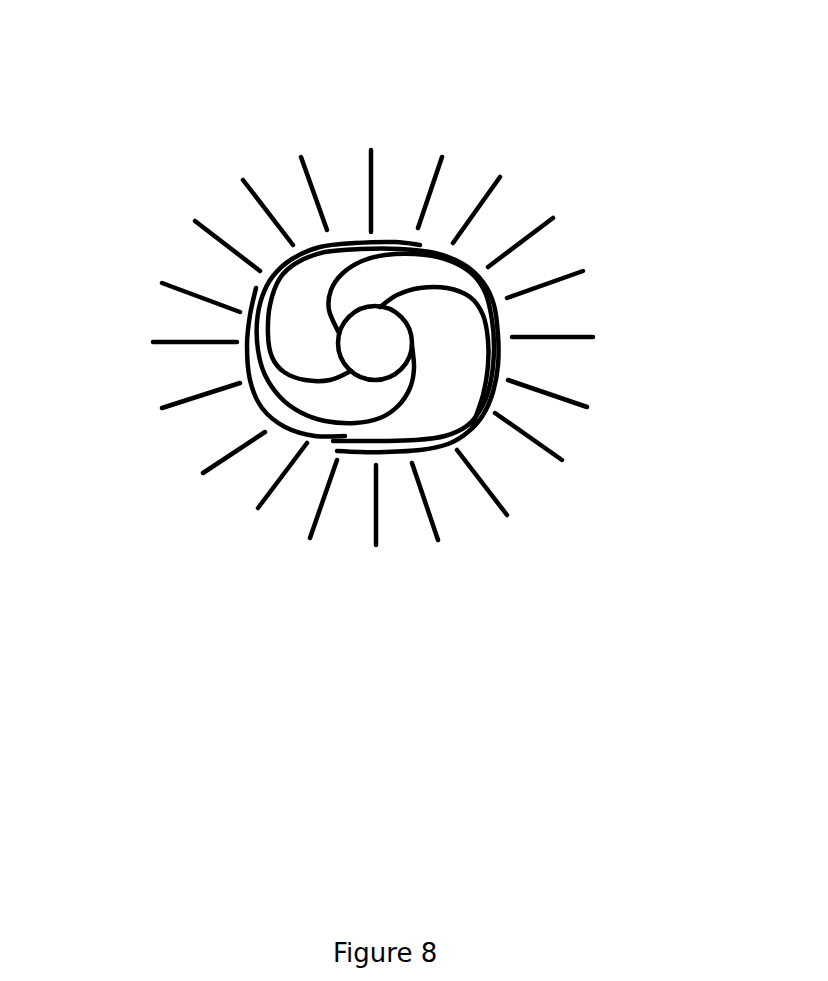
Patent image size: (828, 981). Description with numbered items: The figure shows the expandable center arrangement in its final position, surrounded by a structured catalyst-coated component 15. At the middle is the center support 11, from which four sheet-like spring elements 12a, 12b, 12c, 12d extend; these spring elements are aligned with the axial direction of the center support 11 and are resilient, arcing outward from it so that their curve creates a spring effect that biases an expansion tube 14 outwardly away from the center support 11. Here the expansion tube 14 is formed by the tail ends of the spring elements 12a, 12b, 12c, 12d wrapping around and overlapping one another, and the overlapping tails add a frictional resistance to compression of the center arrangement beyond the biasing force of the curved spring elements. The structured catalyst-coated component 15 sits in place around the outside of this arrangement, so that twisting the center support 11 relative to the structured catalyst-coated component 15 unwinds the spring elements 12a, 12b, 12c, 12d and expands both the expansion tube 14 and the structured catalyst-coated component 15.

The center support 11 is at (400, 363).
The spring element 12a is at (333, 310).
The spring element 12b is at (383, 308).
The spring element 12c is at (407, 390).
The spring element 12d is at (310, 383).
The expansion tube 14 is at (307, 242).
The structured catalyst-coated component 15 is at (320, 188).